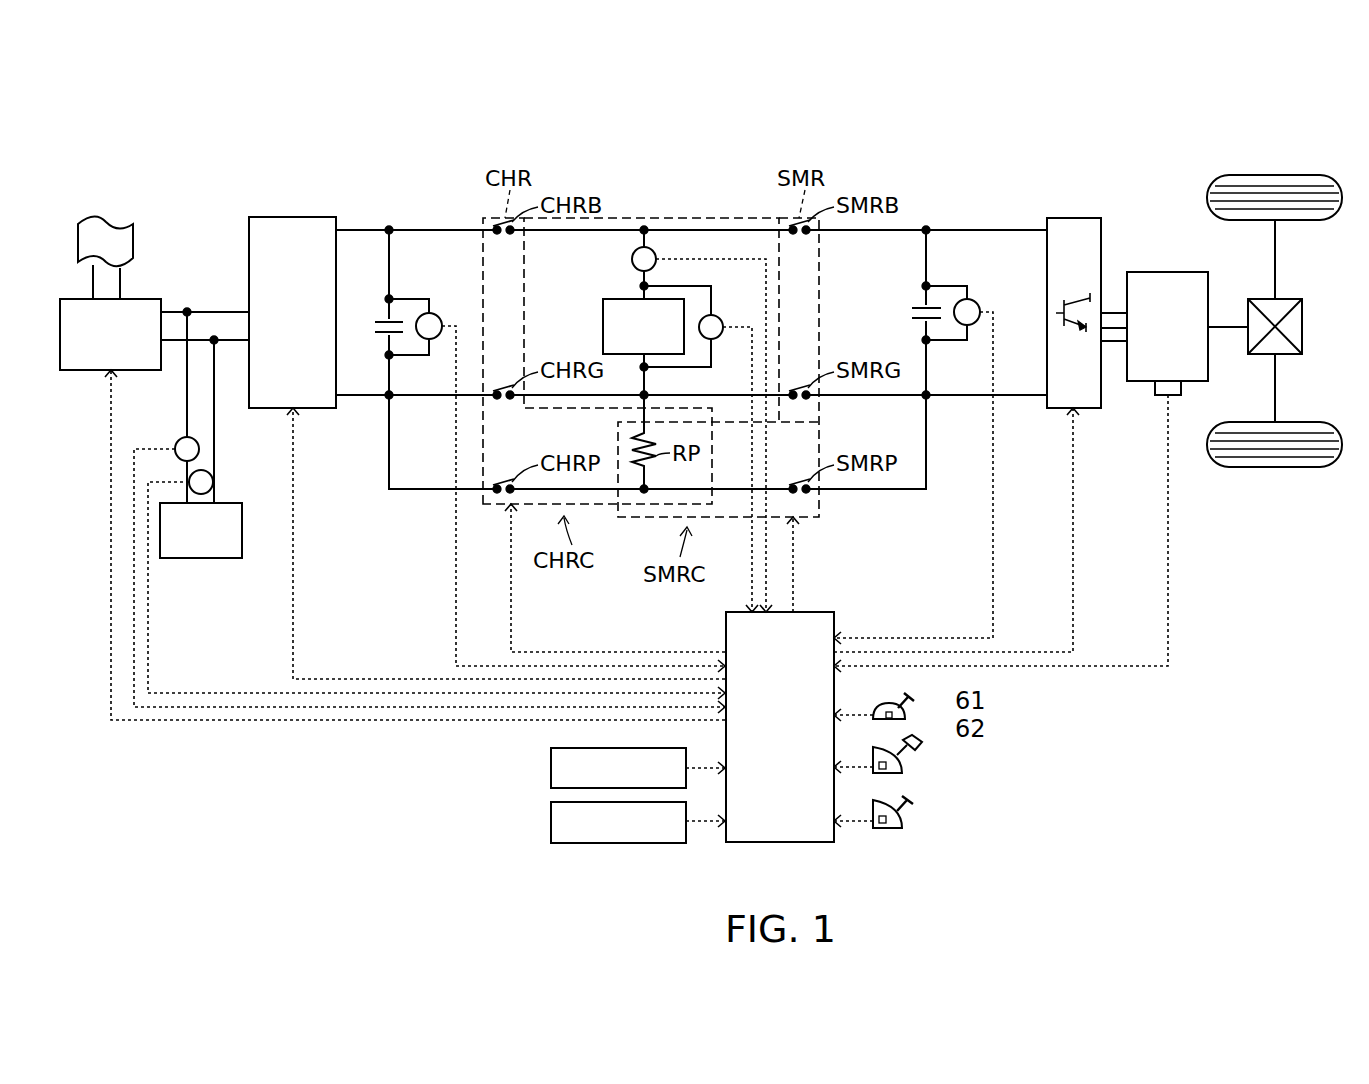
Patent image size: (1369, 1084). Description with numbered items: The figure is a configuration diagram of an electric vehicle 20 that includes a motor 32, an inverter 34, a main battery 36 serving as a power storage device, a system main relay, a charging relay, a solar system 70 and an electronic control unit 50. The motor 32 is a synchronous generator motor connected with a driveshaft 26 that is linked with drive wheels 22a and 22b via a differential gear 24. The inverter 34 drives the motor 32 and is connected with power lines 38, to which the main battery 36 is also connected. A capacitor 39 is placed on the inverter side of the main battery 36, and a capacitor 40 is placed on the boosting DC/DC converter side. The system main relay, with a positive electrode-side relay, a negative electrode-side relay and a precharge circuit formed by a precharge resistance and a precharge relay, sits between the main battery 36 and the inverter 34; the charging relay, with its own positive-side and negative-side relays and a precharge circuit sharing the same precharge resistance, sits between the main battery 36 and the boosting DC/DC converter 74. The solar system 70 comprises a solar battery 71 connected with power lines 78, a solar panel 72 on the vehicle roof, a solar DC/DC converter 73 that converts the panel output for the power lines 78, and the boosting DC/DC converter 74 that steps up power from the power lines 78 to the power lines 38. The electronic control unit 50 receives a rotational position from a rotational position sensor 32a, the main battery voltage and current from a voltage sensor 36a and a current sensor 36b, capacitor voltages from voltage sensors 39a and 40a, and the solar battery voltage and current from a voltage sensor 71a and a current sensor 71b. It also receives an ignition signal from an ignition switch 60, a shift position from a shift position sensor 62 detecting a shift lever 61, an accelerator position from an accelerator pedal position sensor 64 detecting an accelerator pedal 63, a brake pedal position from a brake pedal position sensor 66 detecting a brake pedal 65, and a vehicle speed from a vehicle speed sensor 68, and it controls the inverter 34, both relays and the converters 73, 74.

The electric vehicle 20 is at (1093, 103).
The drive wheel 22a is at (1278, 175).
The drive wheel 22b is at (1275, 467).
The differential gear 24 is at (1287, 299).
The driveshaft 26 is at (1222, 323).
The motor 32 is at (1167, 272).
The rotational position sensor 32a is at (1182, 391).
The inverter 34 is at (1073, 217).
The main battery 36 is at (603, 326).
The voltage sensor 36a is at (718, 315).
The current sensor 36b is at (631, 258).
The power lines 38 is at (1019, 232).
The capacitor 39 is at (918, 306).
The voltage sensor 39a is at (975, 299).
The capacitor 40 is at (383, 320).
The voltage sensor 40a is at (437, 313).
The electronic control unit 50 is at (815, 612).
The ignition switch 60 is at (551, 768).
The shift lever 61 is at (912, 698).
The shift position sensor 62 is at (905, 716).
The accelerator pedal 63 is at (915, 748).
The accelerator pedal position sensor 64 is at (902, 768).
The brake pedal 65 is at (912, 803).
The brake pedal position sensor 66 is at (902, 822).
The vehicle speed sensor 68 is at (551, 822).
The solar system 70 is at (233, 186).
The solar battery 71 is at (202, 558).
The voltage sensor 71a is at (213, 483).
The current sensor 71b is at (200, 450).
The solar panel 72 is at (107, 218).
The solar DC/DC converter 73 is at (147, 299).
The boosting DC/DC converter 74 is at (296, 217).
The power lines 78 is at (218, 338).